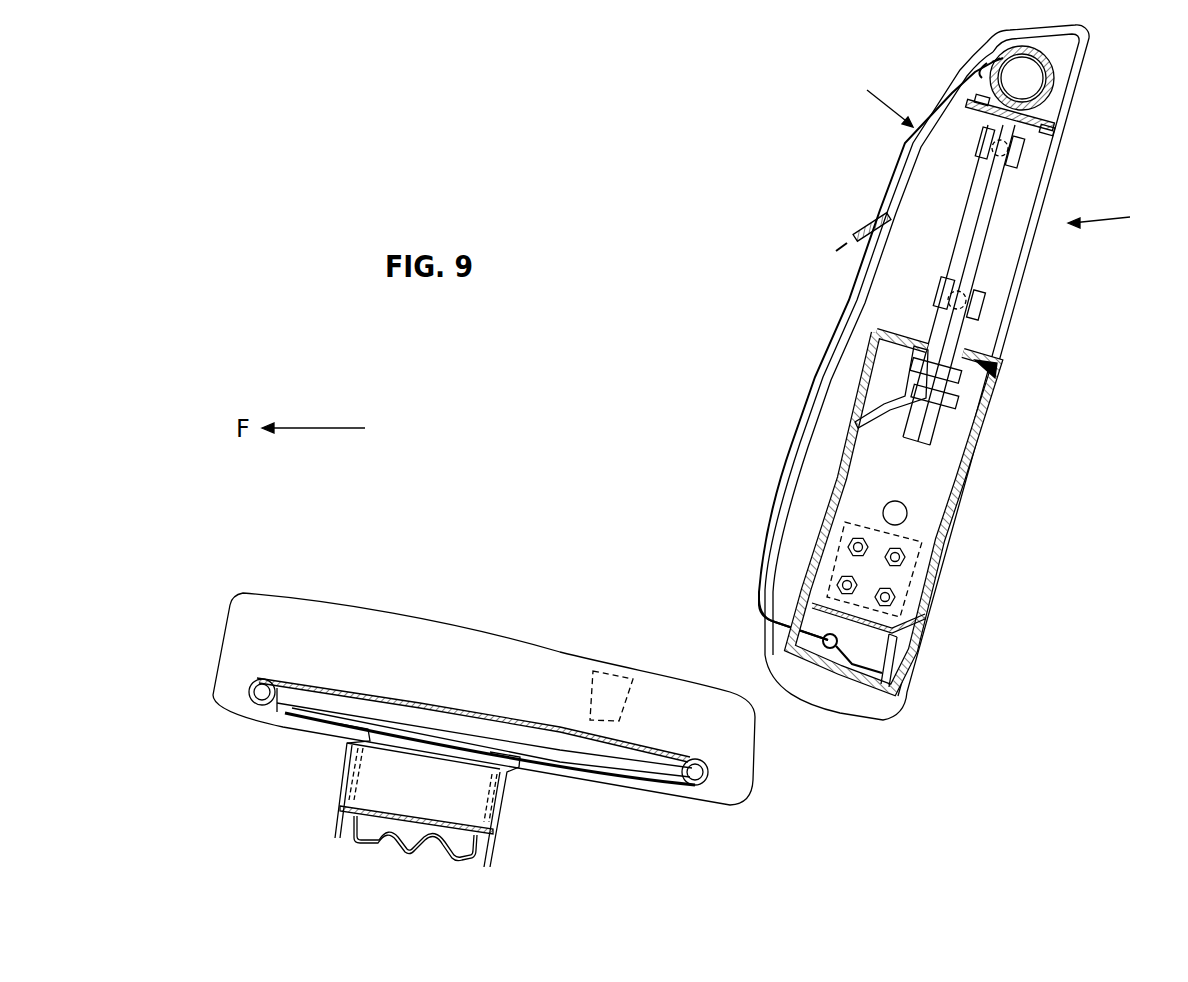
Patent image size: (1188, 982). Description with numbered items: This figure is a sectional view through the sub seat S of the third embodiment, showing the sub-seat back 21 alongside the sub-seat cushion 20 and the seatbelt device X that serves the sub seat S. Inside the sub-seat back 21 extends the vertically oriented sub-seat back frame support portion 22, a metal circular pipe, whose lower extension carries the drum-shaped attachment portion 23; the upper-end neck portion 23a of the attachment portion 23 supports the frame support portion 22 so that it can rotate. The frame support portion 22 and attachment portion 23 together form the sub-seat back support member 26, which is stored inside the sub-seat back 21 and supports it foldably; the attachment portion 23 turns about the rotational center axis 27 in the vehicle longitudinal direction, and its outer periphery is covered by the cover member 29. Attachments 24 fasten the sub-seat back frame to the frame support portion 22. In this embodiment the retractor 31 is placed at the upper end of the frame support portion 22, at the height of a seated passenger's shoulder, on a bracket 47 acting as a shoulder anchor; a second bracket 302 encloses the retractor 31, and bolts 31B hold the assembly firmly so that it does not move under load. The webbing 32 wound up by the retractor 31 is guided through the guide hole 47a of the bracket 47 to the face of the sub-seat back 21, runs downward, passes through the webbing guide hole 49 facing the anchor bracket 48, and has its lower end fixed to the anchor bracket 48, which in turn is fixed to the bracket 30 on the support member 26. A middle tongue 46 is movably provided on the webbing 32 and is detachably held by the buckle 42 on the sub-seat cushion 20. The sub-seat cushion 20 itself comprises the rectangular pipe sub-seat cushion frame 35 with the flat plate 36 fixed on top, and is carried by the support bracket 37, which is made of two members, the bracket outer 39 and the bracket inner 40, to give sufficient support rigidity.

The sub-seat cushion 20 is at (352, 600).
The sub-seat back 21 is at (1050, 187).
The sub-seat back frame support portion 22 is at (990, 262).
The attachment portion 23 is at (970, 440).
The upper-end neck portion 23a is at (960, 393).
The attachments 24 is at (1025, 155).
The sub-seat back support member 26 is at (983, 272).
The rotational center axis 27 is at (913, 507).
The cover member 29 is at (933, 603).
The bracket 30 is at (895, 653).
The retractor 31 is at (1033, 82).
The bolts 31B is at (913, 543).
The second bracket 302 is at (1052, 97).
The webbing 32 is at (800, 410).
The sub-seat cushion frame 35 is at (603, 753).
The plate 36 is at (467, 707).
The support bracket 37 is at (332, 798).
The bracket outer 39 is at (496, 818).
The bracket inner 40 is at (405, 848).
The buckle 42 is at (593, 667).
The middle tongue 46 is at (866, 224).
The bracket 47 is at (1047, 115).
The guide hole 47a is at (987, 63).
The anchor bracket 48 is at (877, 667).
The webbing guide hole 49 is at (758, 617).
The sub seat S is at (1111, 219).
The seatbelt device X is at (881, 97).